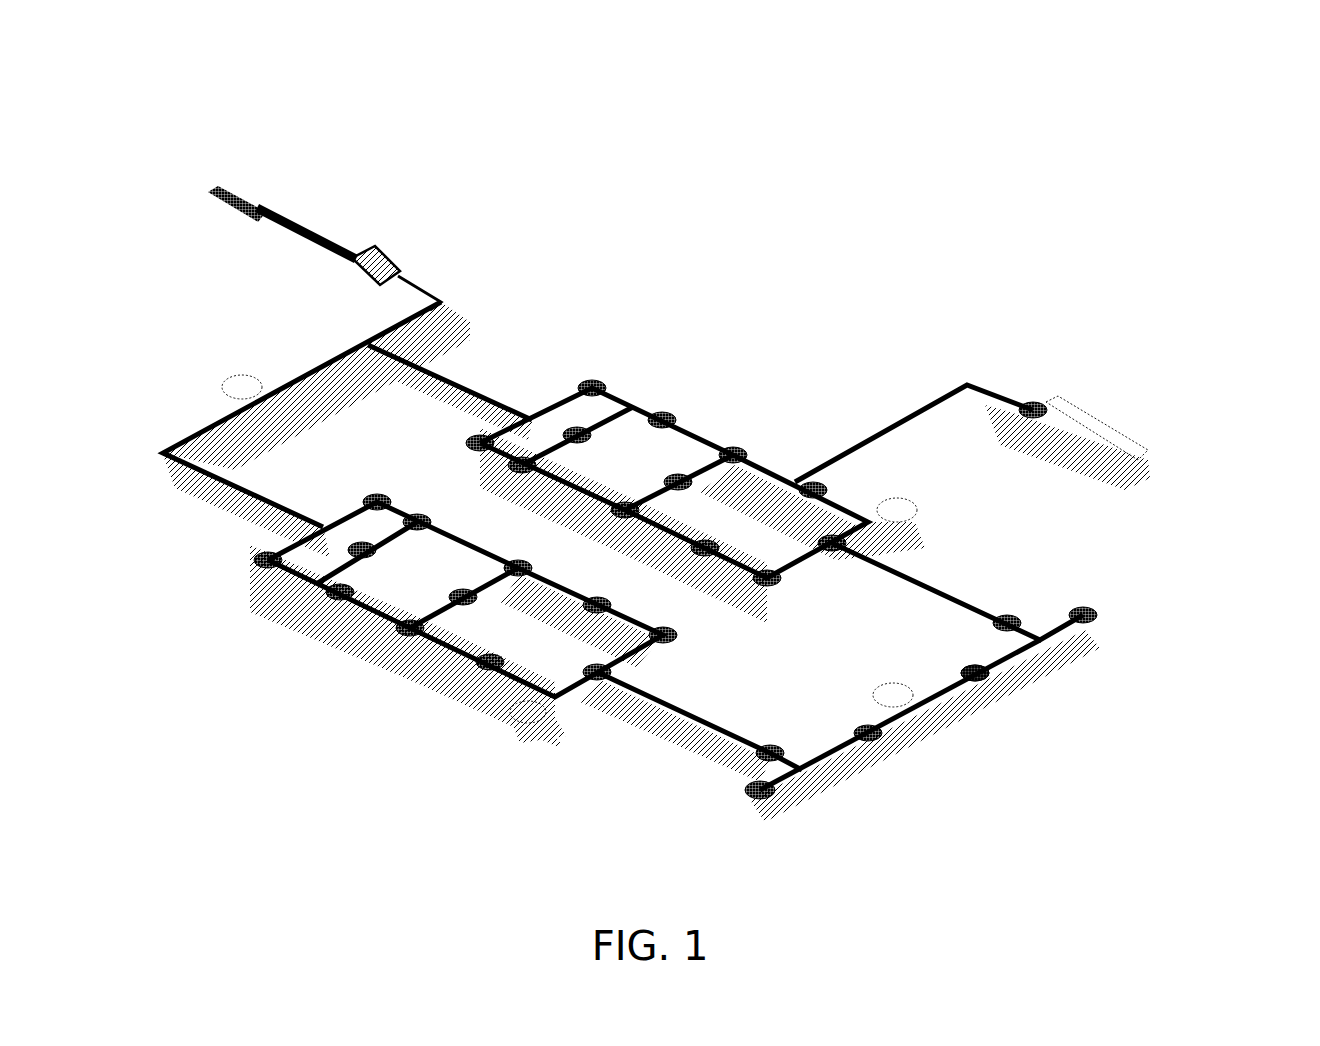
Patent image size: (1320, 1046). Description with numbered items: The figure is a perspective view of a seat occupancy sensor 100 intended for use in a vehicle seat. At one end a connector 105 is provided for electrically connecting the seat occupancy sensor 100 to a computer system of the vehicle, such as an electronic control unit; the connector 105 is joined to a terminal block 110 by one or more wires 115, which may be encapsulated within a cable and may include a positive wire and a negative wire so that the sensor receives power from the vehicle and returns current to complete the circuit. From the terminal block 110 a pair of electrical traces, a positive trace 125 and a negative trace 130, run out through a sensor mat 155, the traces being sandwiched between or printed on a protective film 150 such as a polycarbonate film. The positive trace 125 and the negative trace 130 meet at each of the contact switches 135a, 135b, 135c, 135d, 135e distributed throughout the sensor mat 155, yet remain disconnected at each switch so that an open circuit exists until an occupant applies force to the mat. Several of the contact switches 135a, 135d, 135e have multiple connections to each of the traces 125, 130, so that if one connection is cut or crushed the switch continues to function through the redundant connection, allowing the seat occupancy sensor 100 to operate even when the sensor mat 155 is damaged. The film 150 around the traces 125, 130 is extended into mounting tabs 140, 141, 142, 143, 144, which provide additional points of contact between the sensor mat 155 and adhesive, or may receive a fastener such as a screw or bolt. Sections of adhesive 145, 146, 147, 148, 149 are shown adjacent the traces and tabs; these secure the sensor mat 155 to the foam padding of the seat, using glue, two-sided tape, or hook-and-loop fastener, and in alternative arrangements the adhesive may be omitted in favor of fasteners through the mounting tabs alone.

The seat occupancy sensor 100 is at (1075, 113).
The connector 105 is at (240, 195).
The terminal block 110 is at (372, 279).
The wires 115 is at (365, 258).
The positive trace 125 is at (505, 405).
The negative trace 130 is at (457, 400).
The contact switch 135a is at (596, 384).
The contact switch 135b is at (1050, 409).
The contact switch 135c is at (1098, 615).
The contact switch 135d is at (995, 677).
The contact switch 135e is at (328, 606).
The mounting tab 140 is at (232, 385).
The mounting tab 141 is at (1013, 373).
The mounting tab 142 is at (925, 510).
The mounting tab 143 is at (880, 690).
The mounting tab 144 is at (553, 738).
The adhesive section 145 is at (455, 322).
The adhesive section 146 is at (1160, 486).
The adhesive section 147 is at (895, 557).
The adhesive section 148 is at (835, 788).
The adhesive section 149 is at (410, 652).
The protective film 150 is at (195, 423).
The sensor mat 155 is at (915, 295).